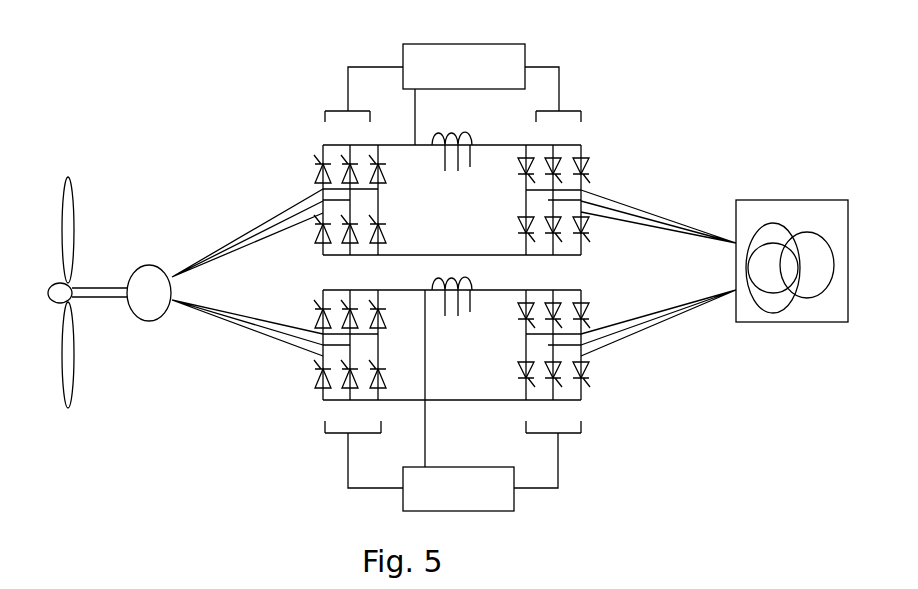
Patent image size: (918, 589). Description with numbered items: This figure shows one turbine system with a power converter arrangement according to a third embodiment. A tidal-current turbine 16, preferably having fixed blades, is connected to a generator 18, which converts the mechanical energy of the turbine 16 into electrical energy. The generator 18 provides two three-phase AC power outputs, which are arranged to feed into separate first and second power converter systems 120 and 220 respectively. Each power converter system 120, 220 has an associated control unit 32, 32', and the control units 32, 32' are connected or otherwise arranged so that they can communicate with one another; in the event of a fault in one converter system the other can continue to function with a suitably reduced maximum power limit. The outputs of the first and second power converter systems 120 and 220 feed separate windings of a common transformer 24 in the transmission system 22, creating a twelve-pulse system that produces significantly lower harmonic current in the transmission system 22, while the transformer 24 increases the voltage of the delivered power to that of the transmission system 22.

The turbine 16 is at (80, 223).
The generator 18 is at (160, 265).
The first power converter system 120 is at (282, 148).
The second power converter system 220 is at (269, 372).
The control unit 32 is at (453, 62).
The control unit 32' is at (453, 481).
The transmission system 22 is at (803, 199).
The transformer 24 is at (770, 223).